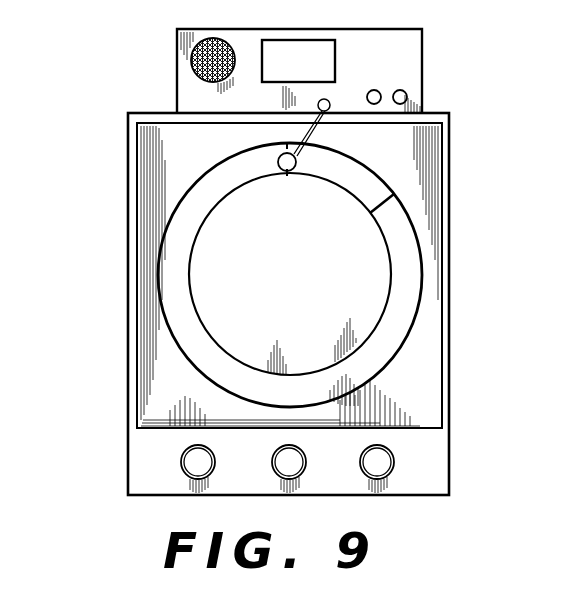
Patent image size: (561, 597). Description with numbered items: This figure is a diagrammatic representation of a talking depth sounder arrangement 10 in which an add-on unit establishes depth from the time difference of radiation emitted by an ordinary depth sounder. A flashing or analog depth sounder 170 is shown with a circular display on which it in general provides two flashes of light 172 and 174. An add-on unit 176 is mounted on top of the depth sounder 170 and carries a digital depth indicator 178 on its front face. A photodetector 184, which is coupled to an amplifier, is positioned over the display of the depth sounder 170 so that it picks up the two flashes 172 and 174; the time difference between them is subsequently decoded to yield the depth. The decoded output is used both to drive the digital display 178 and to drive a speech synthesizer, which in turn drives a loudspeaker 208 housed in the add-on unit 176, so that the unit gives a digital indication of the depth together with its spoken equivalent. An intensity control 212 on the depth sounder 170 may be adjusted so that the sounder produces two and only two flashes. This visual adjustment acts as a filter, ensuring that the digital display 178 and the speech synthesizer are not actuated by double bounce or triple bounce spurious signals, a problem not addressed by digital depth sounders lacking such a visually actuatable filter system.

The laundry appliance 10 is at (464, 99).
The depth sounder 170 is at (461, 297).
The flash of light 172 is at (268, 152).
The flash of light 174 is at (369, 203).
The add-on unit 176 is at (436, 68).
The digital depth indicator 178 is at (323, 47).
The photodetector 184 is at (298, 164).
The loudspeaker 208 is at (190, 61).
The intensity control 212 is at (379, 457).